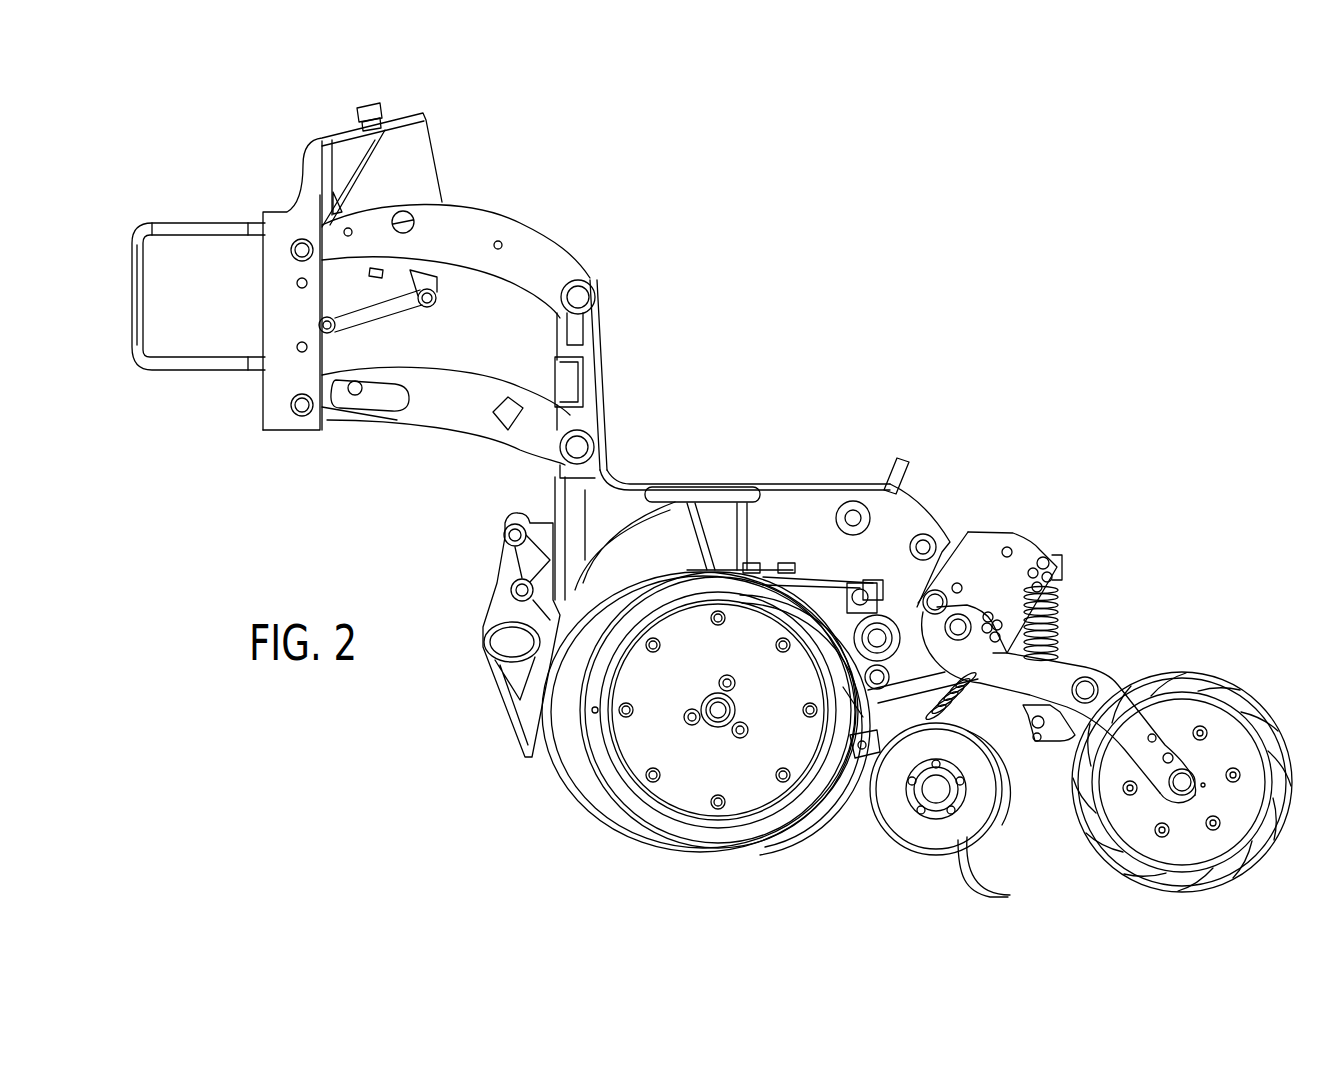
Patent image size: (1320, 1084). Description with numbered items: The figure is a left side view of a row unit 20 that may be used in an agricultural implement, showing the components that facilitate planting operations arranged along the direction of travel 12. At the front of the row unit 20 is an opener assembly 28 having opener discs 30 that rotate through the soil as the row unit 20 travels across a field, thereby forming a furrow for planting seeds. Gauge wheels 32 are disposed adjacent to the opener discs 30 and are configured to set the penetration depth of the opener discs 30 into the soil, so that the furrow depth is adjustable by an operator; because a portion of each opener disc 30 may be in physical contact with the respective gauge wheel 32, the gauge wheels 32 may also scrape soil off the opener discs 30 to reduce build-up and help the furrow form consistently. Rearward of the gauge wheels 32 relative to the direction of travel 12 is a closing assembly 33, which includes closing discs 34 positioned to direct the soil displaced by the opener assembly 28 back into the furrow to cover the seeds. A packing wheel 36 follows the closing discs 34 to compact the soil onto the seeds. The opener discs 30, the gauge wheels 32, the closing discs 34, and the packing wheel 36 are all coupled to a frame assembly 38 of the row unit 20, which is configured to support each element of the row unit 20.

The direction of travel 12 is at (152, 462).
The row unit 20 is at (487, 161).
The opener assembly 28 is at (466, 785).
The opener discs 30 is at (617, 842).
The gauge wheels 32 is at (833, 817).
The closing assembly 33 is at (905, 876).
The closing discs 34 is at (1008, 897).
The packing wheel 36 is at (1232, 680).
The frame assembly 38 is at (1102, 512).